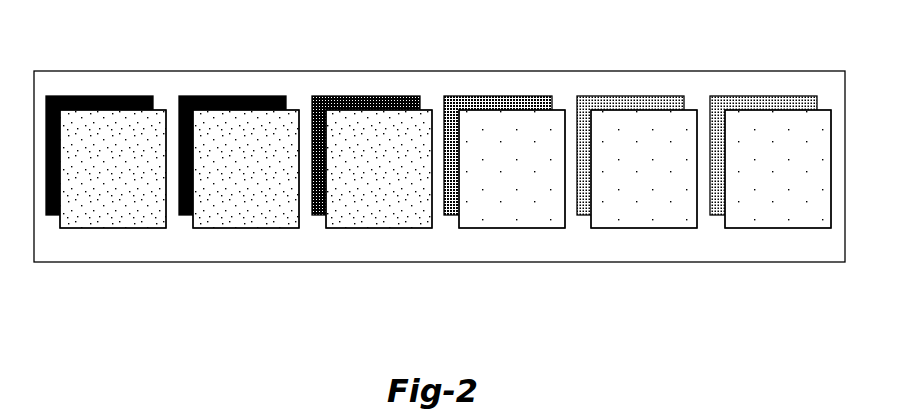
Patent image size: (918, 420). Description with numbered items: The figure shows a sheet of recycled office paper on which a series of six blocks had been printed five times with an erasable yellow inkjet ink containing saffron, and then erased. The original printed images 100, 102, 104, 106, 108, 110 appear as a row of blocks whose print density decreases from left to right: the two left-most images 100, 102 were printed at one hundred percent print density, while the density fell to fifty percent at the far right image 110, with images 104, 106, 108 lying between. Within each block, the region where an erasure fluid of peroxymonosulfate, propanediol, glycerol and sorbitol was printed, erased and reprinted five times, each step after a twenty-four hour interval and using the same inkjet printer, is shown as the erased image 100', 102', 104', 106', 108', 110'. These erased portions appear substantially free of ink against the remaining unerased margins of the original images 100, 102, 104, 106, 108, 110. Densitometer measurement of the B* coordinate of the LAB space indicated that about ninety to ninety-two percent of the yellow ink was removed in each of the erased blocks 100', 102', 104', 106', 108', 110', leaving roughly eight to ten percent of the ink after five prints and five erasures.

The image 100 is at (99, 112).
The erased image 100' is at (113, 208).
The image 102 is at (232, 112).
The erased image 102' is at (246, 208).
The image 104 is at (366, 112).
The erased image 104' is at (379, 208).
The image 106 is at (498, 112).
The erased image 106' is at (512, 208).
The image 108 is at (630, 112).
The erased image 108' is at (644, 208).
The image 110 is at (763, 112).
The erased image 110' is at (778, 208).